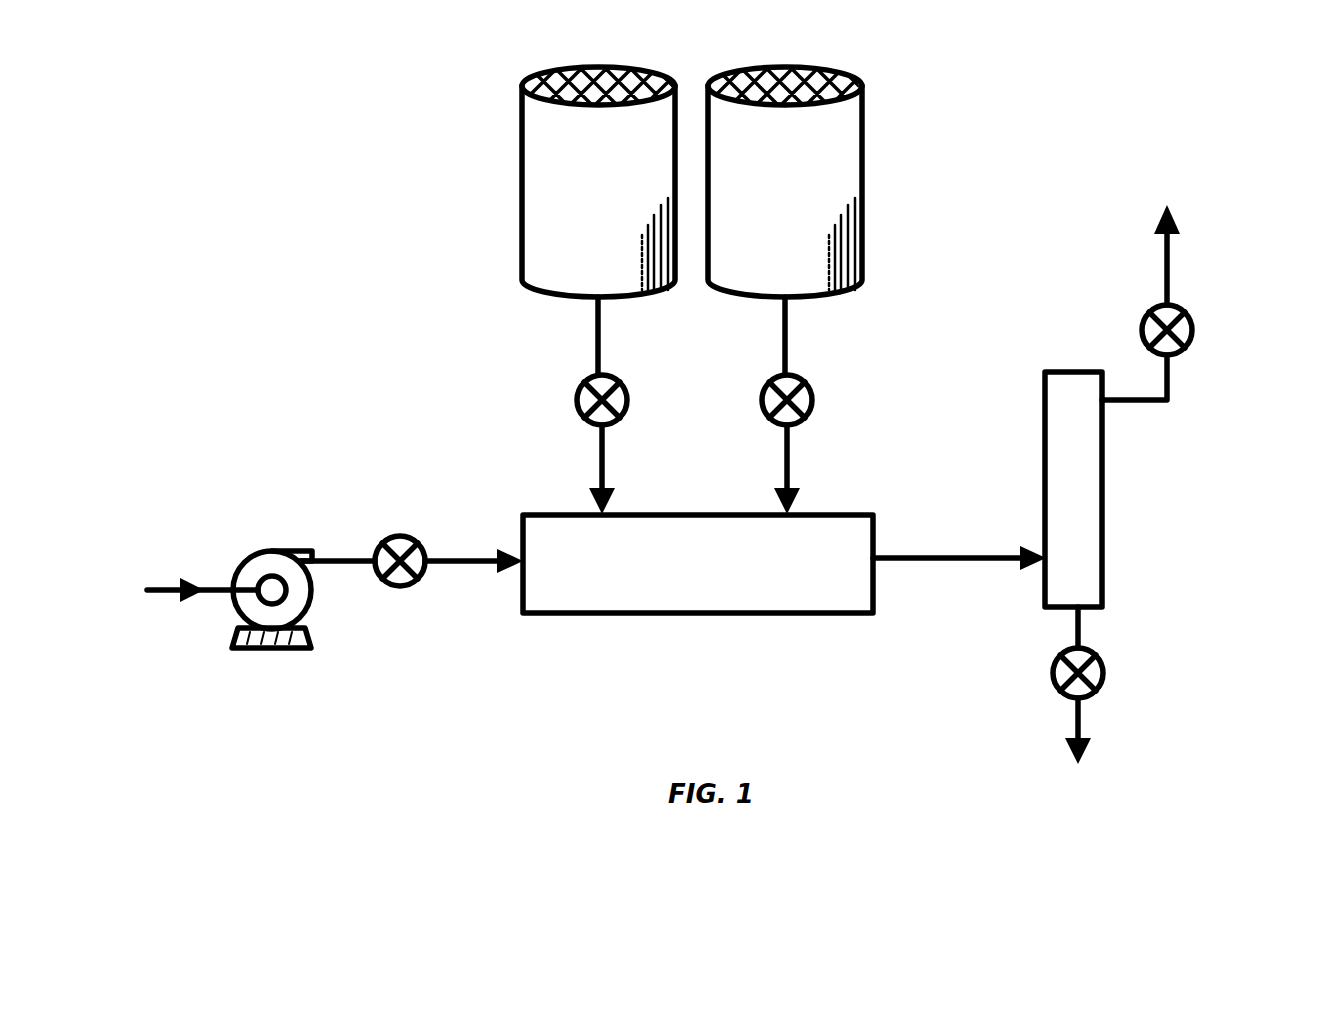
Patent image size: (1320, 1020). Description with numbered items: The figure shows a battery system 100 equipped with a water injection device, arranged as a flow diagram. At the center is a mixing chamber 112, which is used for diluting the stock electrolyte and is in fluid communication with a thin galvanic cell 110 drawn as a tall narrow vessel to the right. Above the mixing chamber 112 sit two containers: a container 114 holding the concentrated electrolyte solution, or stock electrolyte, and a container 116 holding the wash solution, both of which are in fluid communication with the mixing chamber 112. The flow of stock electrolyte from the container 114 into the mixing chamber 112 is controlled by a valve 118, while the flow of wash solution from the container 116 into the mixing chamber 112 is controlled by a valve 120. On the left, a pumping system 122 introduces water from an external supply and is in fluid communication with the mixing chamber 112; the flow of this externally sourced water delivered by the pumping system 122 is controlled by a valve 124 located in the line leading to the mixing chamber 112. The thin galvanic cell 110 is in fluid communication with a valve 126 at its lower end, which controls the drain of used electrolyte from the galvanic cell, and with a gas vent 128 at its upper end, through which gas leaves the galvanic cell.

The battery system 100 is at (142, 864).
The thin galvanic cell 110 is at (1065, 417).
The mixing chamber 112 is at (600, 603).
The container 114 is at (533, 150).
The container 116 is at (845, 153).
The valve 118 is at (580, 378).
The valve 120 is at (767, 378).
The pumping system 122 is at (250, 603).
The valve 124 is at (398, 535).
The valve 126 is at (1110, 672).
The gas vent 128 is at (1200, 333).